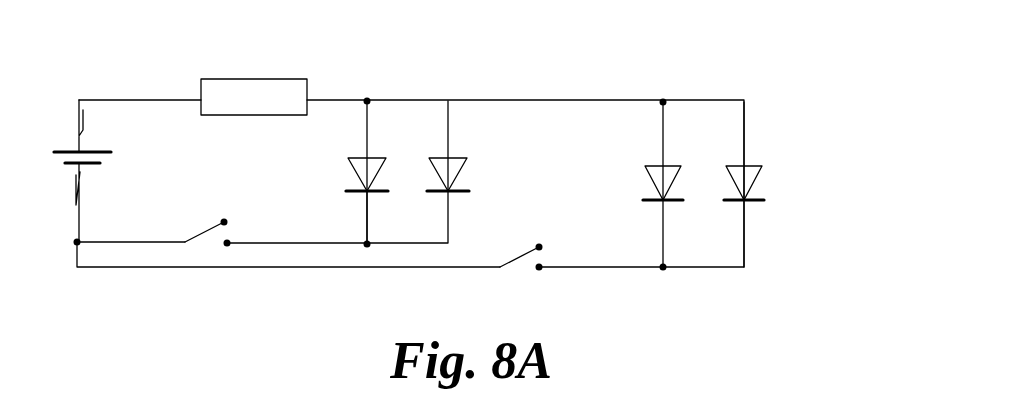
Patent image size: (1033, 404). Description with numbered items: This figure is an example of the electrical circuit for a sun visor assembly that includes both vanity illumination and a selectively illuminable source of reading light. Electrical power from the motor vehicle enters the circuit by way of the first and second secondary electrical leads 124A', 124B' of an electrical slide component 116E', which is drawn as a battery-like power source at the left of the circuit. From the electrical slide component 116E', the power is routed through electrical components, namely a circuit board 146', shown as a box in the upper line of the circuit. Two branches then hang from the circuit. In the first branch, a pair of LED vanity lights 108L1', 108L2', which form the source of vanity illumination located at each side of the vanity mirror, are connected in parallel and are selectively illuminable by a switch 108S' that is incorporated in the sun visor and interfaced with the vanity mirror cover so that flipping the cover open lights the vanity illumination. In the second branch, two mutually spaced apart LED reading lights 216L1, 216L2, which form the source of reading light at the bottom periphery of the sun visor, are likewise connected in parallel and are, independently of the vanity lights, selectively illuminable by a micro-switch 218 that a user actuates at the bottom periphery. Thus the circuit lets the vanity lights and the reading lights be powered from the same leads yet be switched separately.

The second secondary electrical lead 124B' is at (82, 98).
The electrical slide component 116E' is at (142, 157).
The first secondary electrical lead 124A' is at (79, 240).
The electrical components (circuit board) 146' is at (277, 65).
The LED vanity light 108L1' is at (308, 172).
The LED vanity light 108L2' is at (495, 146).
The LED reading light 216L1 is at (650, 184).
The LED reading light 216L2 is at (757, 171).
The switch 108S' is at (199, 269).
The micro-switch 218 is at (523, 265).